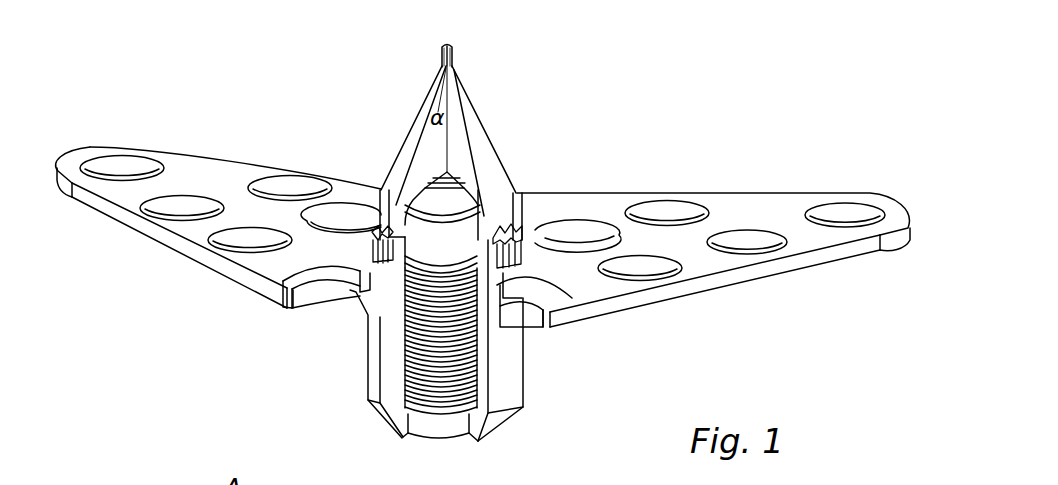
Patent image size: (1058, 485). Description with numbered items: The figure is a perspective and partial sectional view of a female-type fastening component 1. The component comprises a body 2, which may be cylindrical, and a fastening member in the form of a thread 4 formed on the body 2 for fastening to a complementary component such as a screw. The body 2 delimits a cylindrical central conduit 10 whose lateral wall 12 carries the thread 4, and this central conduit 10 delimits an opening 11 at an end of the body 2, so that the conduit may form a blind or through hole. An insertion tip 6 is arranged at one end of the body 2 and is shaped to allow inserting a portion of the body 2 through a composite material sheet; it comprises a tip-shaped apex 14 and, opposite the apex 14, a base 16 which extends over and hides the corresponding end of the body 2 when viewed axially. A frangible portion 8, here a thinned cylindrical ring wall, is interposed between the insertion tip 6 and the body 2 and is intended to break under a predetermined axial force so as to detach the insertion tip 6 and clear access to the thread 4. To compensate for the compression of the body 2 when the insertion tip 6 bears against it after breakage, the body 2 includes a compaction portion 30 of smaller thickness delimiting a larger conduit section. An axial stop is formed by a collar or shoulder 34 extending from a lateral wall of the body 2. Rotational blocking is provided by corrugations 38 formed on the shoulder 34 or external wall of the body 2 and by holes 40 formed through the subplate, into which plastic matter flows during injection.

The fastening component 1 is at (330, 60).
The body 2 is at (373, 359).
The thread 4 is at (448, 414).
The insertion tip 6 is at (453, 60).
The frangible portion 8 is at (547, 243).
The central conduit 10 is at (384, 190).
The opening 11 is at (457, 216).
The lateral wall 12 is at (473, 358).
The apex 14 is at (450, 44).
The base 16 is at (513, 218).
The compaction portion 30 is at (397, 258).
The shoulder 34 is at (517, 305).
The corrugations 38 is at (378, 231).
The holes 40 is at (740, 255).